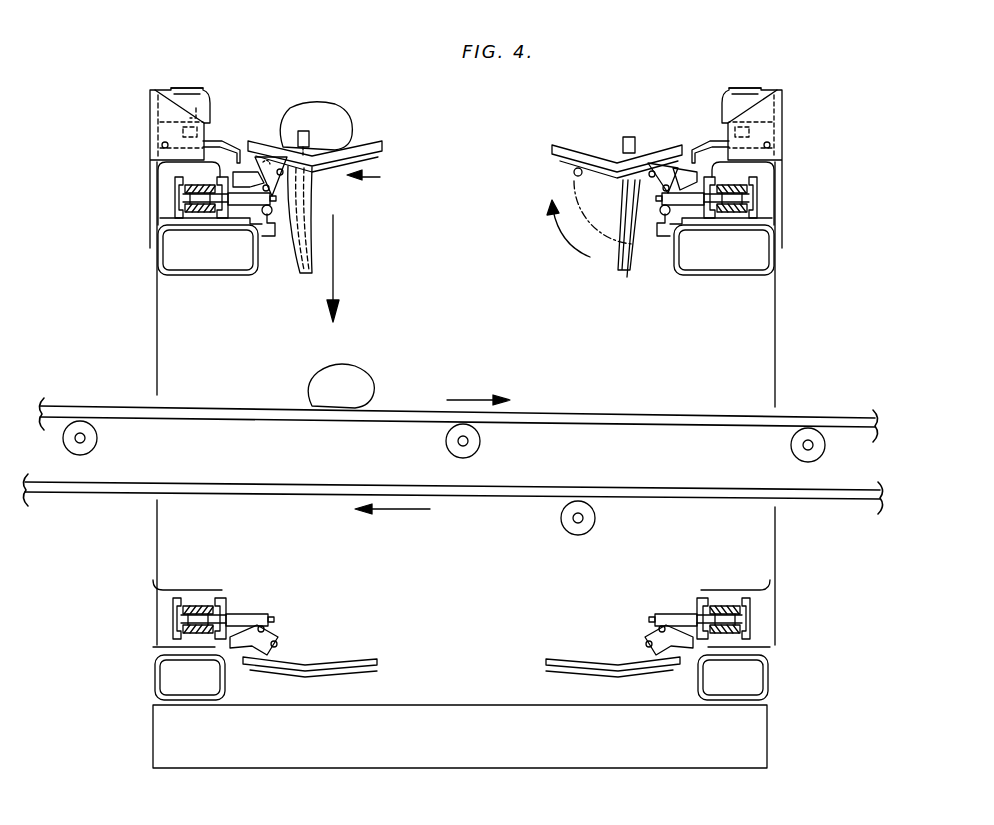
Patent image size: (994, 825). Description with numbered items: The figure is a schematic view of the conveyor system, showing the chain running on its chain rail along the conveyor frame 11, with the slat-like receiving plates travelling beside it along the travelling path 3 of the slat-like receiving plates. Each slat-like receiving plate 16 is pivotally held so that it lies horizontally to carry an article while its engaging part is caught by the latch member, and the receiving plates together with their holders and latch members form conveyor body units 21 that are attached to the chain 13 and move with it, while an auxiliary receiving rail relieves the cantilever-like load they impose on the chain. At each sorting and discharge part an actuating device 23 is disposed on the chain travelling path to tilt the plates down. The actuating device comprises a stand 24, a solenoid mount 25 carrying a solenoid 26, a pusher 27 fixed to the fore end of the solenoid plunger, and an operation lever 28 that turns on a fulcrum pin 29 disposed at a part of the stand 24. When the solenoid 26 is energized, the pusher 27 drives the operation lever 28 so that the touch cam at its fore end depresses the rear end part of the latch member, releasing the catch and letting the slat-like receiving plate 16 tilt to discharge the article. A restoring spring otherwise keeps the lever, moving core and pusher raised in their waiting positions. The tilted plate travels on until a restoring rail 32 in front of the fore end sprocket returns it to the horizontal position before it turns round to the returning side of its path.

The travelling path of slat-like receiving plates 3 is at (594, 147).
The conveyor frame 11 is at (153, 727).
The chain 13 is at (188, 199).
The slat-like receiving plate 16 is at (383, 150).
The conveyor body unit 21 is at (377, 176).
The actuating device 23 is at (150, 107).
The stand 24 is at (150, 138).
The solenoid mount 25 is at (153, 100).
The solenoid 26 is at (190, 88).
The pusher 27 is at (215, 128).
The operation lever 28 is at (233, 142).
The fulcrum pin 29 is at (163, 148).
The restoring rail 32 is at (572, 183).